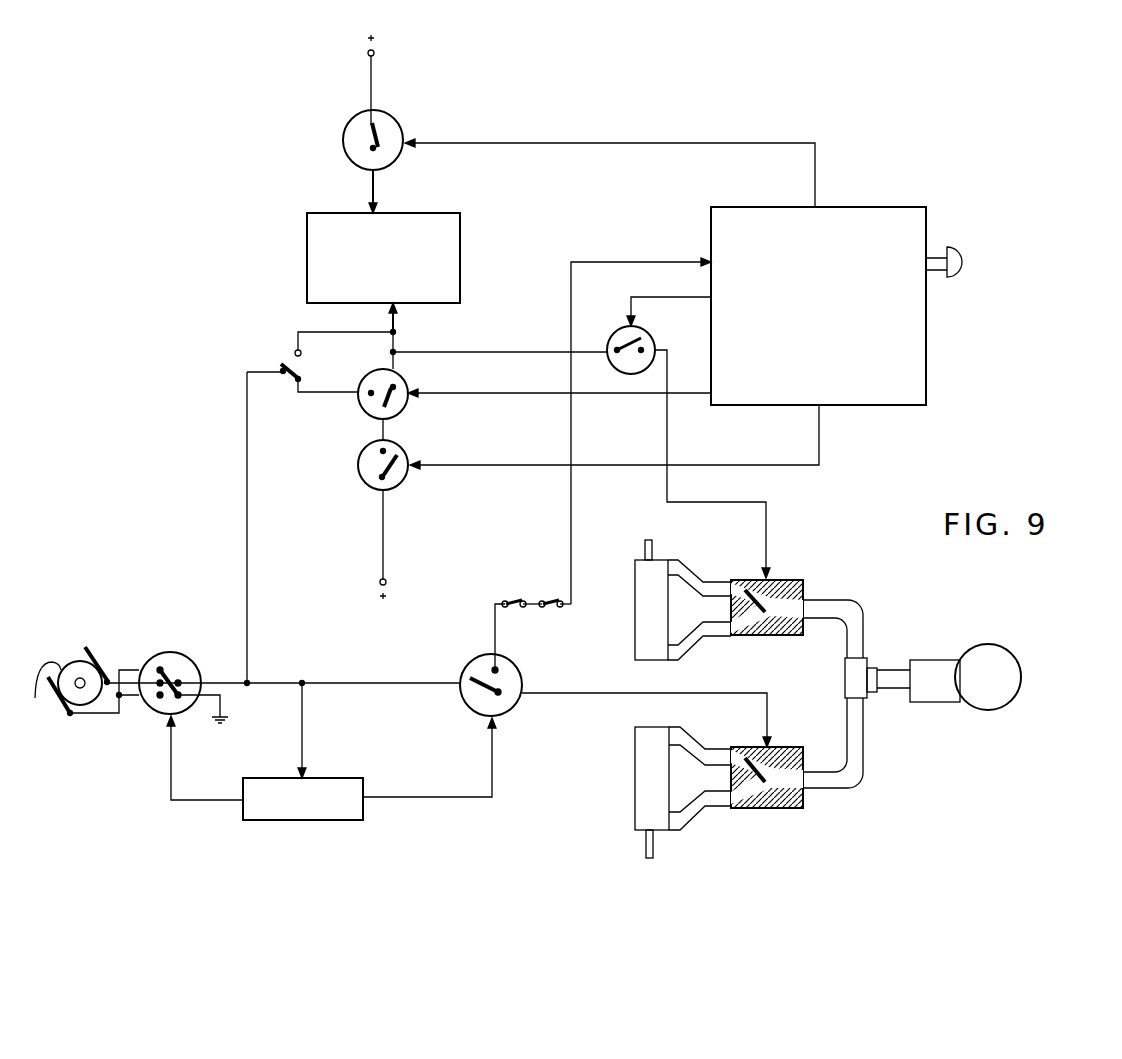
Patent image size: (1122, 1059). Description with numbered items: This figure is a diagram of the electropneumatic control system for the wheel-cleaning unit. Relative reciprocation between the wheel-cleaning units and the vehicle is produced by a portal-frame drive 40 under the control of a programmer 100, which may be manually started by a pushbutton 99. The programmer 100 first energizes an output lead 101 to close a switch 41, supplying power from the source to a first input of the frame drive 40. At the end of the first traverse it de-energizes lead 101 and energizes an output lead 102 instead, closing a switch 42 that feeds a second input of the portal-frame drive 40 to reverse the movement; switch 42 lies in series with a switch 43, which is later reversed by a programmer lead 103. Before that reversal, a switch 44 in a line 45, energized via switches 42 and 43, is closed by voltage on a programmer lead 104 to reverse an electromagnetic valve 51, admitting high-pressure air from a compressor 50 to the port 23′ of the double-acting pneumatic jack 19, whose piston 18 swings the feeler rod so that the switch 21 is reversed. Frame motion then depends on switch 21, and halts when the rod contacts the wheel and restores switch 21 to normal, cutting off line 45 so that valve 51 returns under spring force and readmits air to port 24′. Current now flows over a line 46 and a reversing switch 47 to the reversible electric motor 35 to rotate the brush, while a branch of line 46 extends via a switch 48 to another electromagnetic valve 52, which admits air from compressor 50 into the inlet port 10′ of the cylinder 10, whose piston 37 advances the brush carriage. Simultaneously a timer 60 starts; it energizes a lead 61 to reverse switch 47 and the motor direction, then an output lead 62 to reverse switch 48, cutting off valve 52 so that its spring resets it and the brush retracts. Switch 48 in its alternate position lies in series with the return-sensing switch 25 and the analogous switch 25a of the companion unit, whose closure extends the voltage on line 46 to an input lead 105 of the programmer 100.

The cylinder 10 is at (635, 793).
The inlet port 10′ is at (690, 740).
The piston 18 is at (643, 545).
The double-acting pneumatic jack 19 is at (635, 627).
The switch 21 is at (303, 370).
The port 23′ is at (690, 574).
The port 24′ is at (690, 636).
The return-sensing switch 25 is at (512, 600).
The switch 25a is at (552, 600).
The reversible electric motor 35 is at (78, 689).
The piston 37 is at (653, 850).
The portal-frame drive 40 is at (307, 258).
The switch 41 is at (346, 146).
The switch 42 is at (360, 477).
The switch 43 is at (410, 383).
The switch 44 is at (612, 360).
The line 45 is at (482, 352).
The line 46 is at (247, 600).
The reversing switch 47 is at (180, 656).
The switch 48 is at (508, 708).
The compressor 50 is at (1003, 666).
The electromagnetic valve 51 is at (780, 580).
The electromagnetic valve 52 is at (780, 808).
The timer 60 is at (270, 820).
The lead 61 is at (190, 800).
The output lead 62 is at (432, 797).
The pushbutton 99 is at (963, 272).
The programmer 100 is at (900, 217).
The output lead 101 is at (722, 132).
The output lead 102 is at (770, 466).
The programmer lead 103 is at (681, 392).
The programmer lead 104 is at (666, 298).
The input lead 105 is at (603, 262).